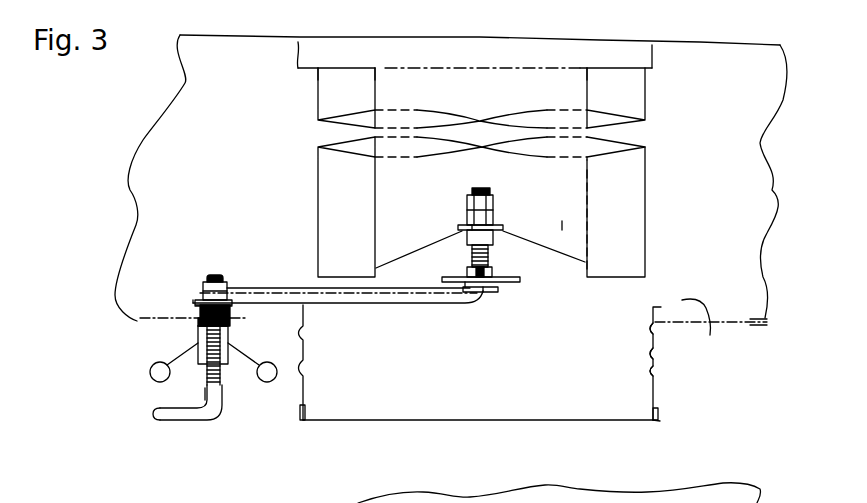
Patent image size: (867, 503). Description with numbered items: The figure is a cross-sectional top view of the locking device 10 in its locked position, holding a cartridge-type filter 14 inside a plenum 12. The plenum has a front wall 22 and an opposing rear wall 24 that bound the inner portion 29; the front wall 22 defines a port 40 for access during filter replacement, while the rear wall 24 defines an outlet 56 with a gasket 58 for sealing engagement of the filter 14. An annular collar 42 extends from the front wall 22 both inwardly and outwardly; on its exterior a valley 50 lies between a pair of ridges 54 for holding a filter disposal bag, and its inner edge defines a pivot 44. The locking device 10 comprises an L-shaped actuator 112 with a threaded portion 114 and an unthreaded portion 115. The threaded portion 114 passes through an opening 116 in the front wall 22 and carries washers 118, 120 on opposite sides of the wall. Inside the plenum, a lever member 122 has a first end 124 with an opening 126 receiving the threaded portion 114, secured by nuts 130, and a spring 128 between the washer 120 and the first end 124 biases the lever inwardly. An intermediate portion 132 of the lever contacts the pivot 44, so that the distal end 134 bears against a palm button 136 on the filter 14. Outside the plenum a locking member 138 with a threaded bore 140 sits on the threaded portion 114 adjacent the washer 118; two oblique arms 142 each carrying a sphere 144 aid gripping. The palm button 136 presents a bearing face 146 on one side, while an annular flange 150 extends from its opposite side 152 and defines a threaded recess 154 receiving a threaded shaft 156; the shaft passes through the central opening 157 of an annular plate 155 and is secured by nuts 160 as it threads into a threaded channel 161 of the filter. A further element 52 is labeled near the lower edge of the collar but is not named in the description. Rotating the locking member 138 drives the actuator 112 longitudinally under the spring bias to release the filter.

The locking device 10 is at (105, 358).
The plenum 12 is at (765, 277).
The filter 14 is at (633, 208).
The front wall 22 is at (140, 322).
The rear wall 24 is at (706, 46).
The inner portion 29 is at (742, 246).
The port 40 is at (562, 421).
The annular collar 42 is at (655, 398).
The pivot 44 is at (310, 306).
The valley 50 is at (655, 355).
The bottom edge 52 is at (657, 422).
The ridges 54 is at (655, 334).
The outlet 56 is at (505, 37).
The gasket 58 is at (655, 60).
The L-shaped actuator 112 is at (212, 421).
The threaded portion 114 is at (220, 386).
The unthreaded portion 115 is at (172, 424).
The opening 116 is at (229, 326).
The washer 118 is at (199, 332).
The washer 120 is at (205, 312).
The lever member 122 is at (262, 287).
The first end 124 is at (201, 285).
The opening 126 is at (216, 279).
The spring 128 is at (232, 312).
The nuts 130 is at (209, 278).
The intermediate portion 132 is at (300, 279).
The distal end 134 is at (486, 296).
The palm button 136 is at (512, 283).
The locking member 138 is at (219, 358).
The threaded bore 140 is at (210, 356).
The arms 142 is at (179, 359).
The sphere 144 is at (152, 376).
The bearing face 146 is at (489, 295).
The annular flange 150 is at (494, 245).
The opposite side 152 is at (467, 280).
The threaded recess 154 is at (494, 270).
The annular plate 155 is at (505, 226).
The threaded shaft 156 is at (473, 258).
The central opening 157 is at (472, 227).
The nuts 160 is at (485, 193).
The threaded channel 161 is at (505, 226).